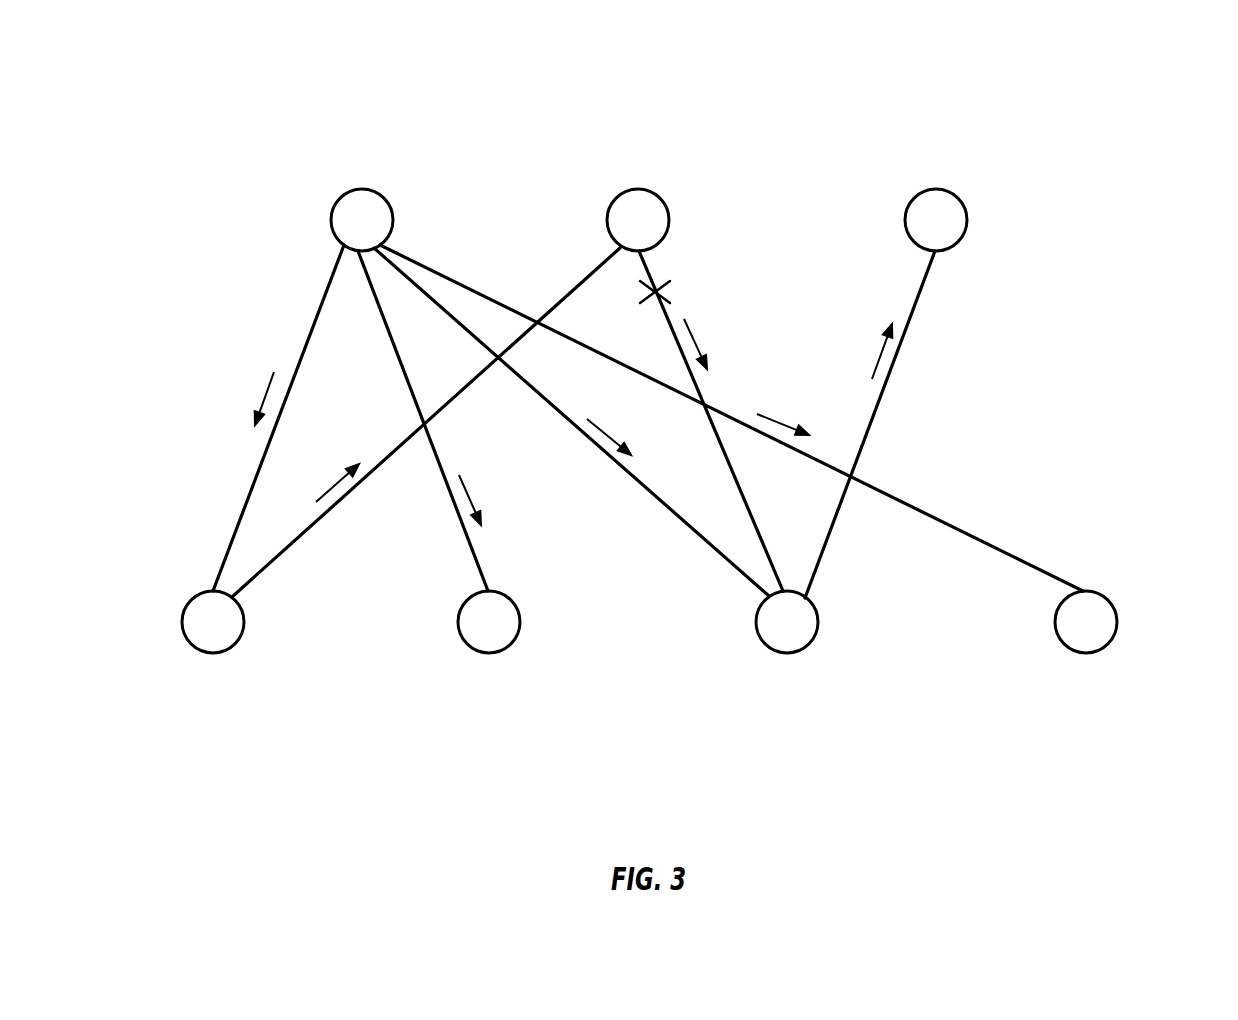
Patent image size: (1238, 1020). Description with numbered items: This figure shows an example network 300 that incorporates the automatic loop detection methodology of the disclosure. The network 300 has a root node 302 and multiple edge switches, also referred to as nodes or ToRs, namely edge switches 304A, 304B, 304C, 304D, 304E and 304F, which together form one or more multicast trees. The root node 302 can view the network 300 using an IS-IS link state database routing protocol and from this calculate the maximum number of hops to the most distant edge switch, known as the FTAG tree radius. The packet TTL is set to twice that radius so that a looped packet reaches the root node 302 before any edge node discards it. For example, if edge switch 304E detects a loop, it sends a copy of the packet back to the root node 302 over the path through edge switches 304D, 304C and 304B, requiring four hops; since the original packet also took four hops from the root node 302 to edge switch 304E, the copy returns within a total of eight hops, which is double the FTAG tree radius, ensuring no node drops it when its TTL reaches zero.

The network 300 is at (875, 82).
The root node 302 is at (342, 200).
The edge switch 304A is at (192, 648).
The edge switch 304B is at (468, 648).
The edge switch 304C is at (617, 200).
The edge switch 304D is at (810, 648).
The edge switch 304E is at (959, 200).
The edge switch 304F is at (1109, 648).